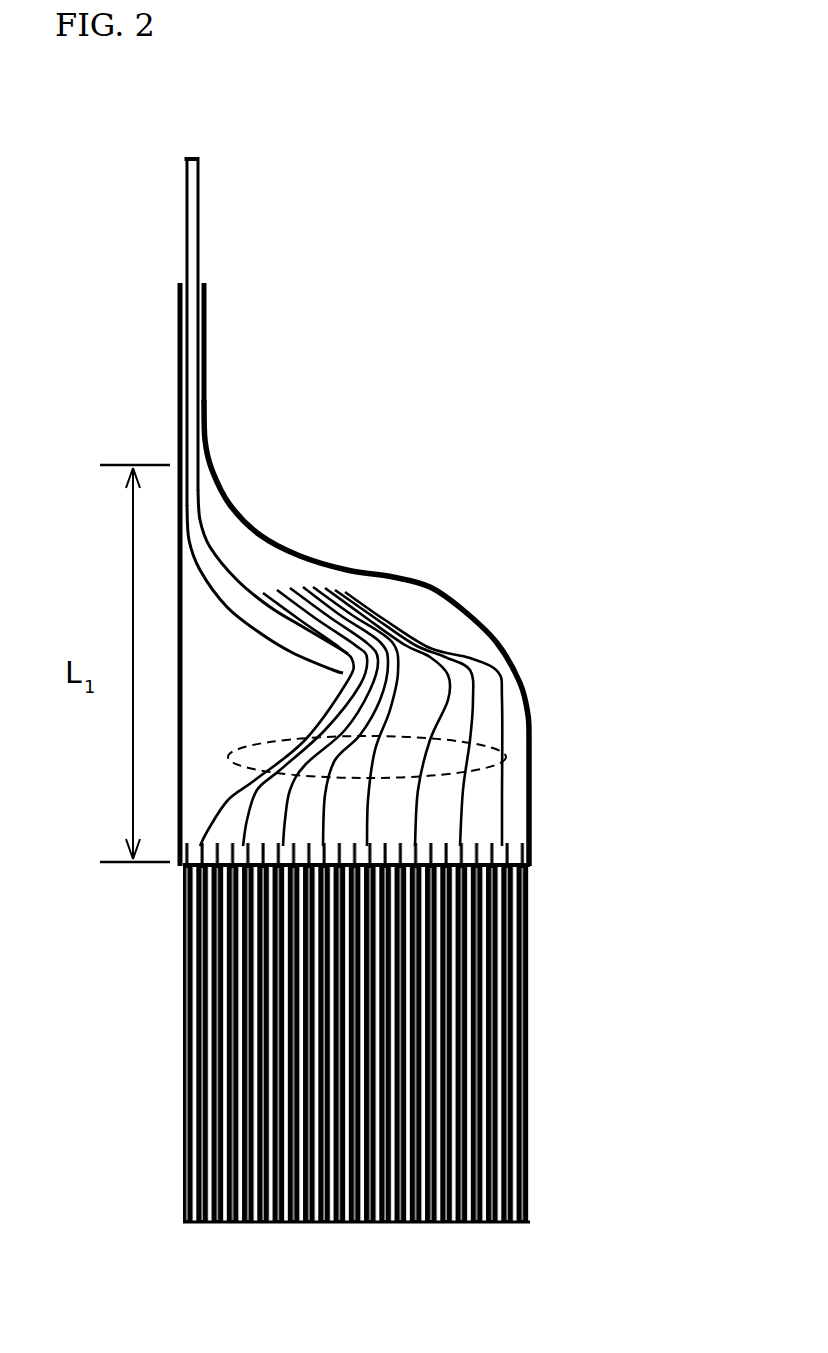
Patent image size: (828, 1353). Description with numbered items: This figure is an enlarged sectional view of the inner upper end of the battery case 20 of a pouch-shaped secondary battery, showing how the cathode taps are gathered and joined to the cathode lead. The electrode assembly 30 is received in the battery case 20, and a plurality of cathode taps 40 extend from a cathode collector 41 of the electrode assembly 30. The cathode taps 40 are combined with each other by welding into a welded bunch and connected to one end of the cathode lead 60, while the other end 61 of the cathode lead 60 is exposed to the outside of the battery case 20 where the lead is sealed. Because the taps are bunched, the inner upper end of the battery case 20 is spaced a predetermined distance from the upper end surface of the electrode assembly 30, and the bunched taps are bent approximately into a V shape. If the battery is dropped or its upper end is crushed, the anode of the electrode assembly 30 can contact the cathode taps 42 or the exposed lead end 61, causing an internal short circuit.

The battery case 20 is at (403, 575).
The electrode assembly 30 is at (530, 1230).
The cathode taps 40 is at (505, 755).
The cathode collector 41 is at (215, 935).
The cathode taps 42 is at (503, 808).
The cathode lead 60 is at (200, 477).
The other end of the cathode lead 61 is at (198, 233).